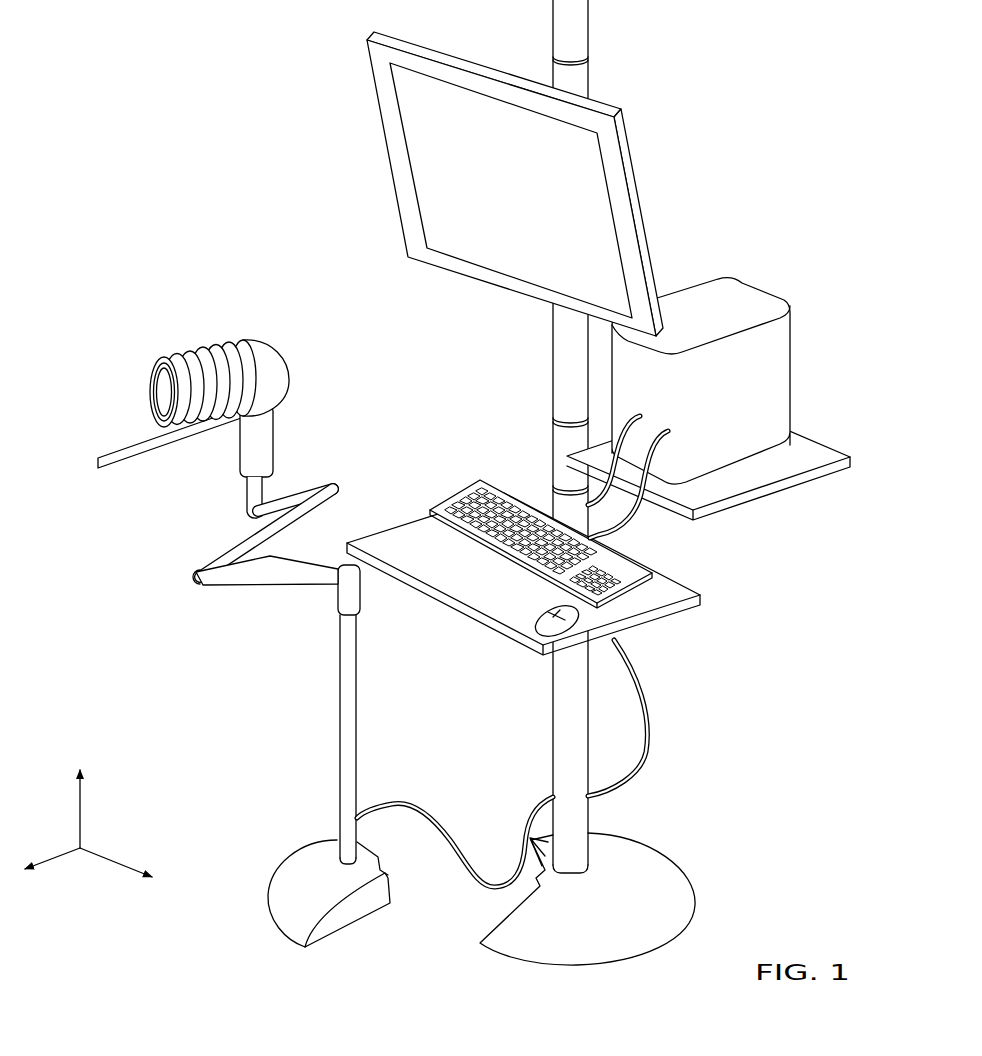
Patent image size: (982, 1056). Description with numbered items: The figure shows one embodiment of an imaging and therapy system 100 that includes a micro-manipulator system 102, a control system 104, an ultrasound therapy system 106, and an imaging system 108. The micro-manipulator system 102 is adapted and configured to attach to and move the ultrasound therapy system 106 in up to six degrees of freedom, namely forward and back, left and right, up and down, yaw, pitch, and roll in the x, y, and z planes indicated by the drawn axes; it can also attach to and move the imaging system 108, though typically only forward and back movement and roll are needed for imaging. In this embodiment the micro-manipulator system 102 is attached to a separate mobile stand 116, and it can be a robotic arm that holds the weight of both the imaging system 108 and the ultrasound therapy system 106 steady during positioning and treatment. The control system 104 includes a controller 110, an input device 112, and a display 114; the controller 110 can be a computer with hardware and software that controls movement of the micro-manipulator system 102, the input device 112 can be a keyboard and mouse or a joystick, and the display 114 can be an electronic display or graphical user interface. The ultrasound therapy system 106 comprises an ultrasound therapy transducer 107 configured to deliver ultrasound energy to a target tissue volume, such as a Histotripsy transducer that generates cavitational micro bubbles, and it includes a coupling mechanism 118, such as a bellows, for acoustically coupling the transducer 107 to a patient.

The imaging and therapy system 100 is at (230, 106).
The micro-manipulator system 102 is at (322, 487).
The control system 104 is at (705, 567).
The ultrasound therapy system 106 is at (156, 326).
The ultrasound therapy transducer 107 is at (217, 348).
The imaging system 108 is at (121, 468).
The controller 110 is at (727, 285).
The input device 112 is at (507, 557).
The display 114 is at (630, 137).
The mobile stand 116 is at (340, 692).
The coupling mechanism 118 is at (177, 358).